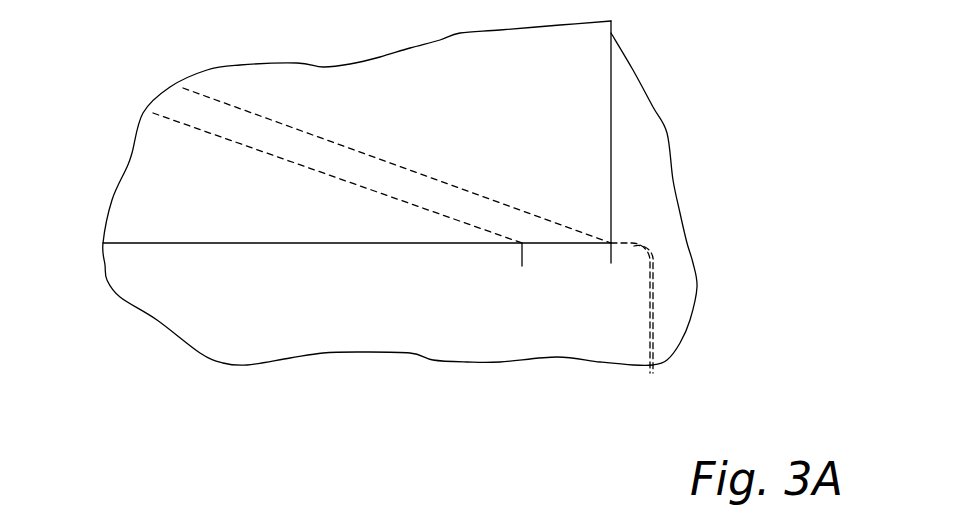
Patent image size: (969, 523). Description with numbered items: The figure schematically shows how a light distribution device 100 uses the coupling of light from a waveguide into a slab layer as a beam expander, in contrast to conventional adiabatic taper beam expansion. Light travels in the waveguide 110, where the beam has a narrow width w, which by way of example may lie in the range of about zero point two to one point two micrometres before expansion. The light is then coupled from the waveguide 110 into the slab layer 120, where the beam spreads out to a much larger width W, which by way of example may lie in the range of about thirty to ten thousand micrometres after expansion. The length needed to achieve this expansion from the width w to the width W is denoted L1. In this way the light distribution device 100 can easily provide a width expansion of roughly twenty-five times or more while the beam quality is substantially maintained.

The light distribution device 100 is at (725, 88).
The waveguide 110 is at (645, 258).
The slab layer 120 is at (160, 178).
The width of the light beam in the slab layer W is at (322, 166).
The length required to achieve the beam expansion L1 is at (611, 260).
The width of the light beam in the waveguide w is at (610, 327).